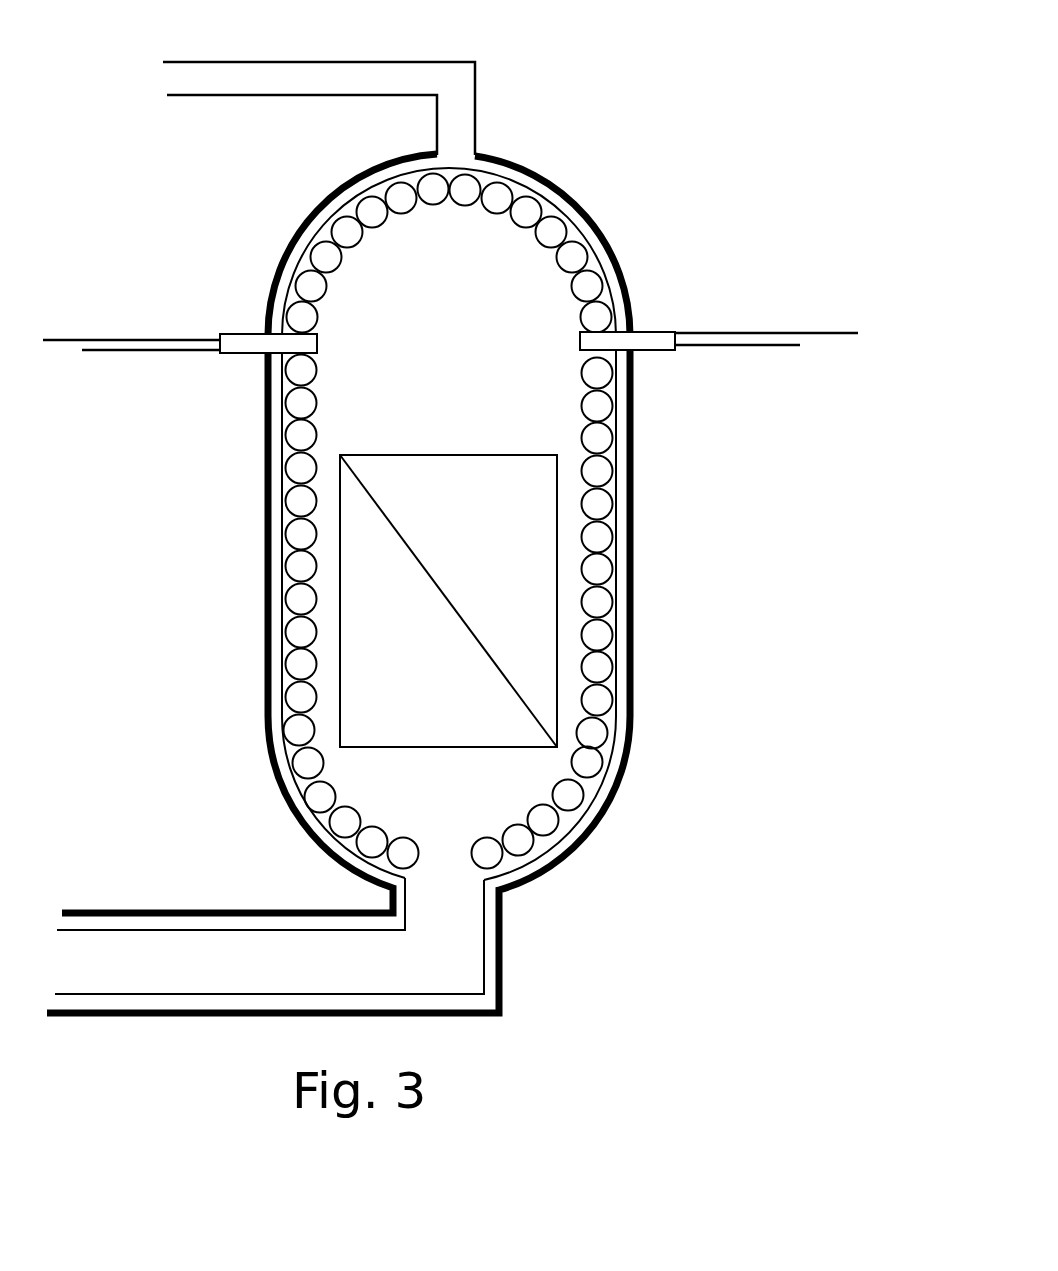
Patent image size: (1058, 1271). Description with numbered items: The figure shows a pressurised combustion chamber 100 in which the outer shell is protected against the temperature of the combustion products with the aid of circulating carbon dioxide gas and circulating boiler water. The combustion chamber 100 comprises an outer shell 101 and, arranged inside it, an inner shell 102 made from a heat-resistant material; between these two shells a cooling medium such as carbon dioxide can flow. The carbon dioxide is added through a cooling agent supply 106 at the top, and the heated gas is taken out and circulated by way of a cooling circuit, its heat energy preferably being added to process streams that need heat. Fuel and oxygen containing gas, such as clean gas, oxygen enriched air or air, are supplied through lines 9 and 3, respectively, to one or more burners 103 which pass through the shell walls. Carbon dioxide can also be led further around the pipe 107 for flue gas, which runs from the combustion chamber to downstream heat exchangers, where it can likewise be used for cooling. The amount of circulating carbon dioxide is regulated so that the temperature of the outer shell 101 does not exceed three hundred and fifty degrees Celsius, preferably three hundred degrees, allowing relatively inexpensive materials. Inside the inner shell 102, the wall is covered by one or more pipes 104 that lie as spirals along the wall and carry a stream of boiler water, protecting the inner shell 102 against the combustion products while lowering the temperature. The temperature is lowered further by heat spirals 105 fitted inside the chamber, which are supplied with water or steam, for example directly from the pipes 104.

The line 3 is at (52, 338).
The line 9 is at (96, 352).
The combustion chamber 100 is at (782, 528).
The outer shell 101 is at (574, 190).
The inner shell 102 is at (612, 256).
The burner 103 is at (243, 356).
The pipe 104 is at (597, 442).
The heat spirals 105 is at (448, 601).
The cooling agent supply 106 is at (319, 108).
The pipe for flue gas 107 is at (269, 936).